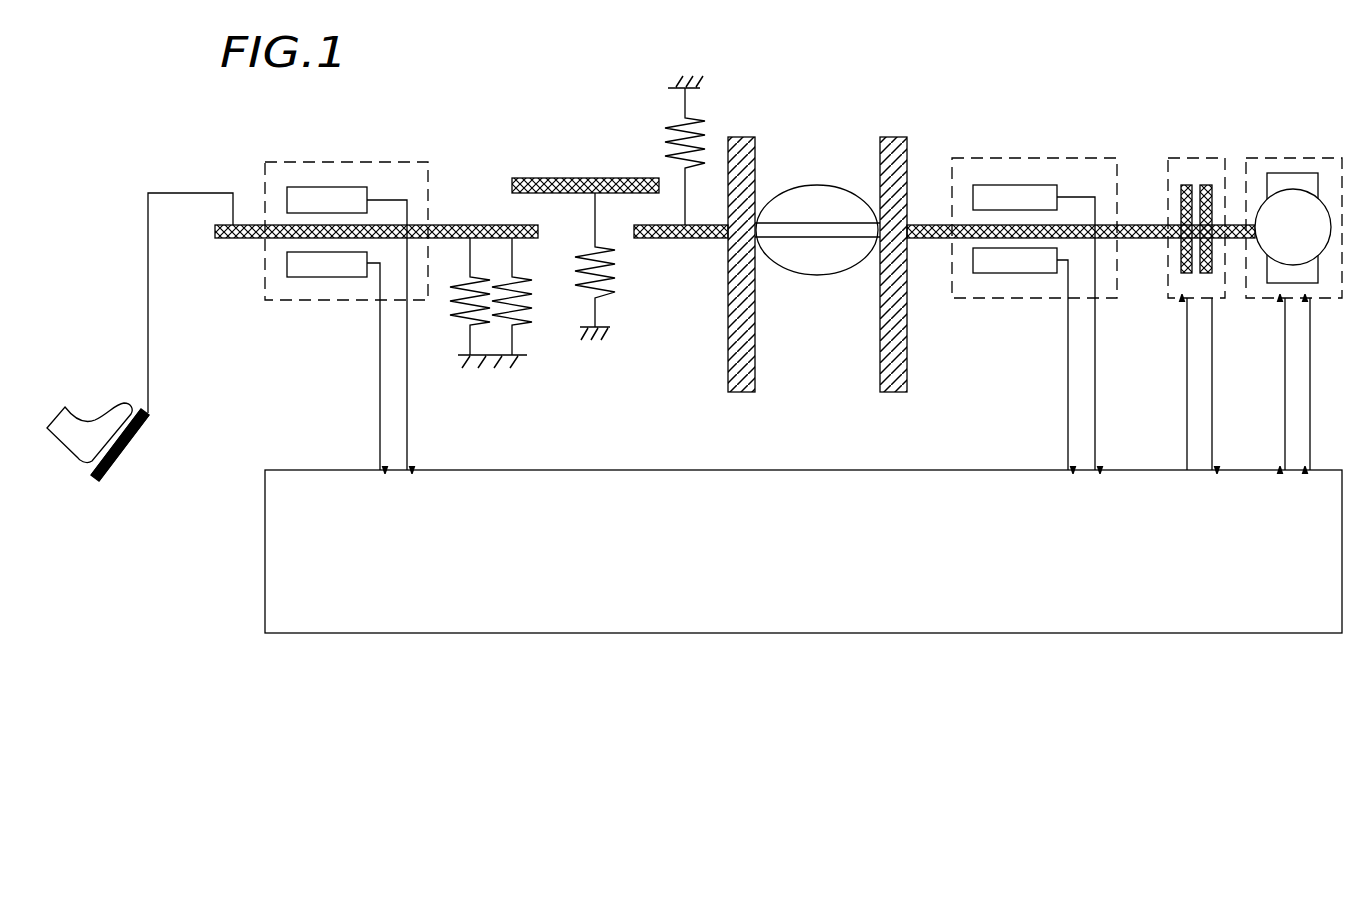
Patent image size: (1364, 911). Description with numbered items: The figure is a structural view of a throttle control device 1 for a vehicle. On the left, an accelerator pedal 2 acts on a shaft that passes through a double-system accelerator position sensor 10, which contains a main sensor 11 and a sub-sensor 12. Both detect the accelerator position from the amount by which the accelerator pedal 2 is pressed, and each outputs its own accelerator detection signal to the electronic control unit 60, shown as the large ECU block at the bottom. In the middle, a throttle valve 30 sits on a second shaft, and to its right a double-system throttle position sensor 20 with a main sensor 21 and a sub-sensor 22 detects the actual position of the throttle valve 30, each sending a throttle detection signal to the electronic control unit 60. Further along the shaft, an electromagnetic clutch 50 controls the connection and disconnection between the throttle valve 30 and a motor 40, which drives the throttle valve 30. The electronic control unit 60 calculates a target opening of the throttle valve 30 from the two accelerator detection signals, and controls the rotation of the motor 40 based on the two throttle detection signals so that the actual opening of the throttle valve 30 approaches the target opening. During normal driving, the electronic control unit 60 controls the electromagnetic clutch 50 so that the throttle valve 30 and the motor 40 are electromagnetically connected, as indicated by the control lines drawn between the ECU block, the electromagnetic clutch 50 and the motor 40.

The throttle control device 1 is at (694, 396).
The accelerator pedal 2 is at (140, 435).
The accelerator position sensor 10 is at (346, 274).
The main sensor 11 is at (315, 187).
The sub-sensor 12 is at (313, 277).
The throttle position sensor 20 is at (1034, 278).
The main sensor 21 is at (1007, 185).
The sub-sensor 22 is at (1000, 273).
The throttle valve 30 is at (828, 185).
The motor 40 is at (1272, 158).
The electromagnetic clutch 50 is at (1178, 158).
The electronic control unit 60 is at (661, 470).